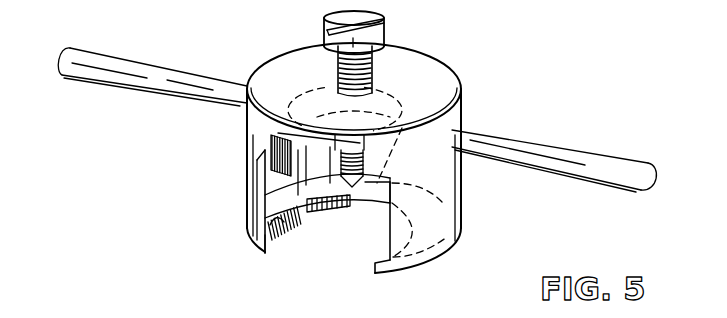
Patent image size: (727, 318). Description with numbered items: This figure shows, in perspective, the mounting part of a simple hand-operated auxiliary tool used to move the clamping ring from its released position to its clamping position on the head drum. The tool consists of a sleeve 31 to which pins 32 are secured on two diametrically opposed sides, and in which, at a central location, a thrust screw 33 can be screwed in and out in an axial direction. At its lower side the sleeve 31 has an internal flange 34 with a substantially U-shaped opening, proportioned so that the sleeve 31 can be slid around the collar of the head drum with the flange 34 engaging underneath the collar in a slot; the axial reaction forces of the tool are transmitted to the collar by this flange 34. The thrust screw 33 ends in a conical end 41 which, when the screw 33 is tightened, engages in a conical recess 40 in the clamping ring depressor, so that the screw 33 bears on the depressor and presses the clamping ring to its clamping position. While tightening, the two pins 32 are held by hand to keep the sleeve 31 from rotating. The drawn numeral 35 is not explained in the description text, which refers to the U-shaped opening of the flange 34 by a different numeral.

The sleeve 31 is at (442, 83).
The pins 32 is at (127, 68).
The thrust screw 33 is at (385, 38).
The internal flange 34 is at (292, 237).
The bottom slot 35 is at (367, 242).
The conical recess 40 is at (446, 313).
The conical end 41 is at (353, 185).